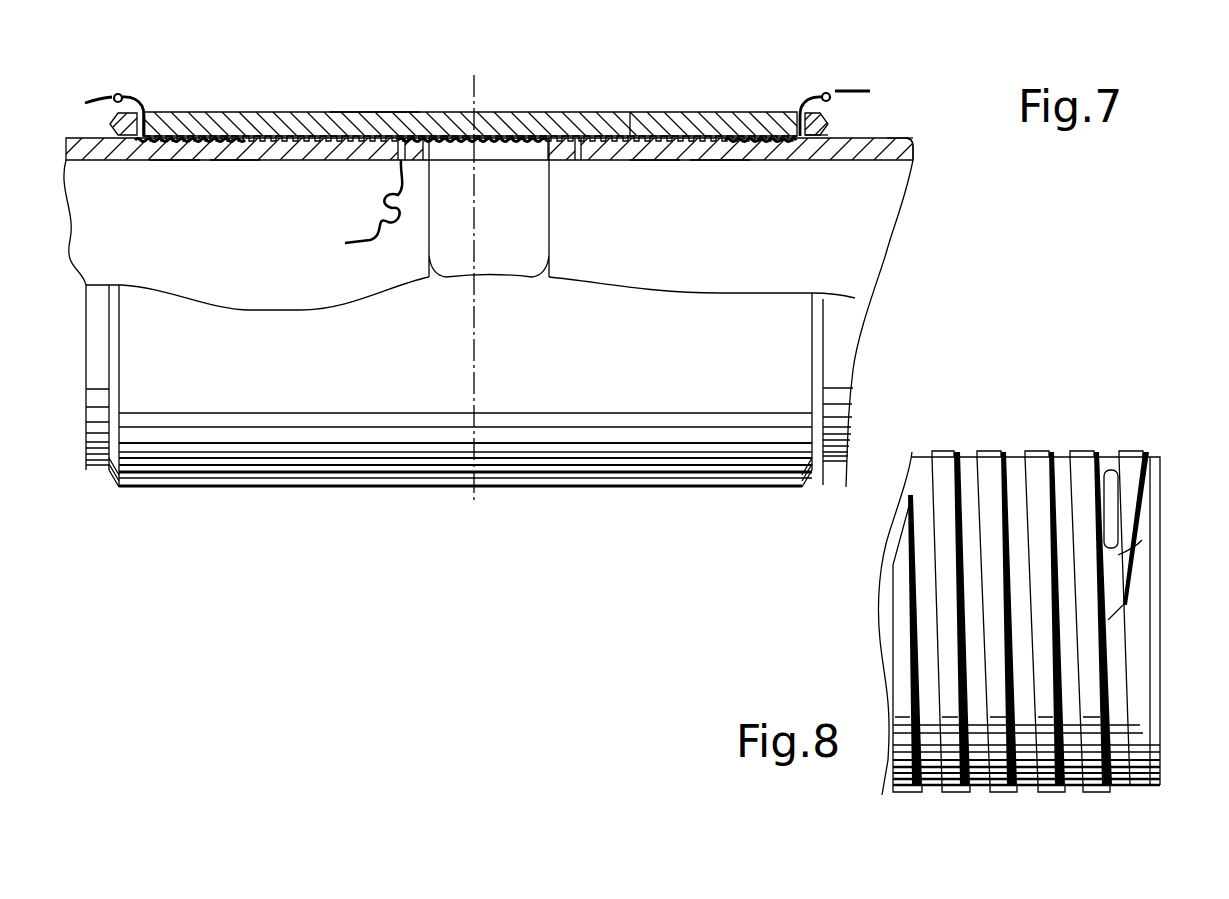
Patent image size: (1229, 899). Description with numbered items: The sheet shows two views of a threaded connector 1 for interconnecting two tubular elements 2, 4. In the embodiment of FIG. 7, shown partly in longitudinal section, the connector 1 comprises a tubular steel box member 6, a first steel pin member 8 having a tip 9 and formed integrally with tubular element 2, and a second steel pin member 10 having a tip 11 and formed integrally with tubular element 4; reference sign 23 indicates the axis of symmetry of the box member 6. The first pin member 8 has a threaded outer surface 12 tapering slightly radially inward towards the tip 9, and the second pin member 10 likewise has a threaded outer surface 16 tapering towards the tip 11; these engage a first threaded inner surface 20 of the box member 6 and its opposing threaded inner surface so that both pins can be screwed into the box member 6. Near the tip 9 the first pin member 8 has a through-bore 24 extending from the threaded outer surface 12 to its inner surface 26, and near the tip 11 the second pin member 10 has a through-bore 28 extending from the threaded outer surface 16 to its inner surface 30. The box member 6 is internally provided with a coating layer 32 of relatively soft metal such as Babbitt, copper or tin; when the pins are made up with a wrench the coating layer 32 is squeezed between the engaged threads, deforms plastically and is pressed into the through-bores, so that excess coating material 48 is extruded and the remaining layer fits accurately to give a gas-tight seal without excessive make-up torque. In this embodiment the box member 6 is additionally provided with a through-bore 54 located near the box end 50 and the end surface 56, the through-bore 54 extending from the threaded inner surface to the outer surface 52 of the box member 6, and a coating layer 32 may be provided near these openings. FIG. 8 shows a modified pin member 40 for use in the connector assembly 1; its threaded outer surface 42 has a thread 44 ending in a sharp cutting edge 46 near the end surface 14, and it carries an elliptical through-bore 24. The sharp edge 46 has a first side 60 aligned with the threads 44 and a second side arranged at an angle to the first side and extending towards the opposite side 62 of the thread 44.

In FIG. 7, the connector 1 is at (924, 153).
In FIG. 7, the tubular element 2 is at (68, 161).
In FIG. 7, the tubular element 4 is at (913, 140).
In FIG. 7, the box member 6 is at (283, 112).
In FIG. 7, the first pin member 8 is at (175, 161).
In FIG. 7, the tip 9 is at (443, 283).
In FIG. 7, the second pin member 10 is at (718, 161).
In FIG. 7, the tip 11 is at (536, 283).
In FIG. 7, the threaded outer surface 12 is at (263, 134).
In FIG. 8, the end surface 14 is at (1160, 655).
In FIG. 7, the threaded outer surface 16 is at (650, 130).
In FIG. 7, the first threaded inner surface 20 is at (192, 142).
In FIG. 7, the axis of symmetry 23 is at (474, 392).
In FIG. 8, the through-bore 24 is at (1111, 482).
In FIG. 7, the inner surface 26 is at (235, 161).
In FIG. 7, the through-bore 28 is at (578, 161).
In FIG. 7, the inner surface 30 is at (657, 161).
In FIG. 7, the coating layer 32 is at (508, 138).
In FIG. 8, the pin member 40 is at (1036, 575).
In FIG. 8, the threaded outer surface 42 is at (947, 450).
In FIG. 8, the thread 44 is at (1031, 450).
In FIG. 8, the sharp cutting edge 46 is at (1135, 582).
In FIG. 7, the excess coating material 48 is at (112, 95).
In FIG. 7, the box end 50 is at (545, 488).
In FIG. 7, the outer surface 52 is at (345, 112).
In FIG. 7, the through-bore 54 is at (118, 120).
In FIG. 7, the end surface 56 is at (822, 130).
In FIG. 8, the first side 60 is at (1118, 600).
In FIG. 8, the opposite side 62 is at (1146, 495).